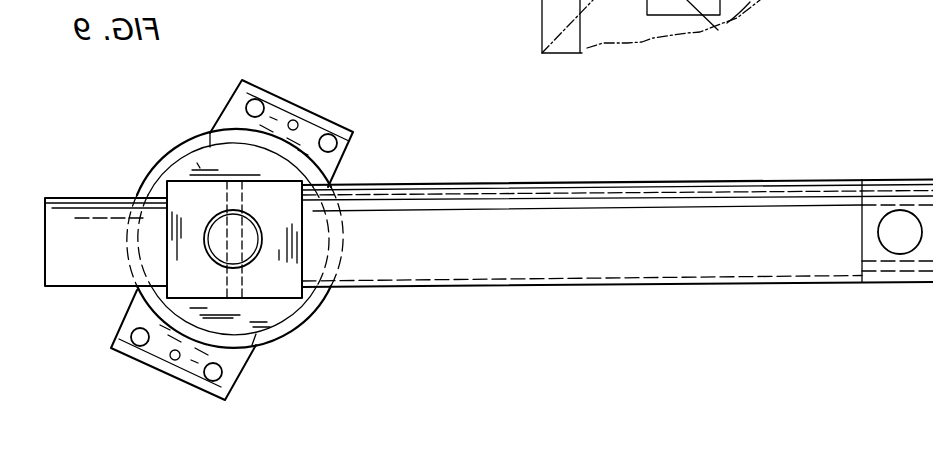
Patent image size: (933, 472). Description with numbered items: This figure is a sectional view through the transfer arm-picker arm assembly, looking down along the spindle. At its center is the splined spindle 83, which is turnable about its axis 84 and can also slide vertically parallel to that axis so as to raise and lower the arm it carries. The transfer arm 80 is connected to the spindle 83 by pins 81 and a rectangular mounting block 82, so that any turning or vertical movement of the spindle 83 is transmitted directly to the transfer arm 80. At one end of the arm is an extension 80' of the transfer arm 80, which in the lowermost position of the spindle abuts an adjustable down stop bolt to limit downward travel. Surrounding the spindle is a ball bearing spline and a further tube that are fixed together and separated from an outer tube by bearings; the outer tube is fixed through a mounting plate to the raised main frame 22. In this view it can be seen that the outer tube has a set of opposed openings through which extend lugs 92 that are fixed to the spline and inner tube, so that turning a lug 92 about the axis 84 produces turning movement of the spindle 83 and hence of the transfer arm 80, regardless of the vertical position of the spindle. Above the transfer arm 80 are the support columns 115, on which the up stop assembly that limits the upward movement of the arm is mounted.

The transfer arm 80 is at (617, 217).
The extension of the transfer arm 80' is at (88, 258).
The pins 81 is at (200, 166).
The rectangular mounting block 82 is at (282, 287).
The spindle 83 is at (217, 230).
The axis 84 is at (237, 242).
The support columns 115 is at (334, 121).
The raised main frame 22 is at (540, 18).
The lugs 92 is at (647, 0).